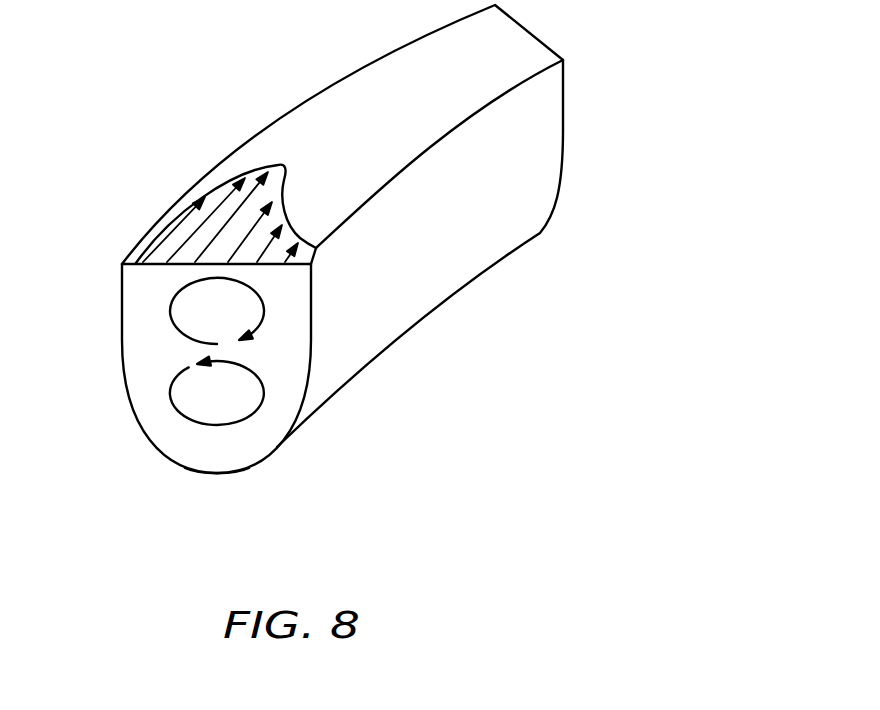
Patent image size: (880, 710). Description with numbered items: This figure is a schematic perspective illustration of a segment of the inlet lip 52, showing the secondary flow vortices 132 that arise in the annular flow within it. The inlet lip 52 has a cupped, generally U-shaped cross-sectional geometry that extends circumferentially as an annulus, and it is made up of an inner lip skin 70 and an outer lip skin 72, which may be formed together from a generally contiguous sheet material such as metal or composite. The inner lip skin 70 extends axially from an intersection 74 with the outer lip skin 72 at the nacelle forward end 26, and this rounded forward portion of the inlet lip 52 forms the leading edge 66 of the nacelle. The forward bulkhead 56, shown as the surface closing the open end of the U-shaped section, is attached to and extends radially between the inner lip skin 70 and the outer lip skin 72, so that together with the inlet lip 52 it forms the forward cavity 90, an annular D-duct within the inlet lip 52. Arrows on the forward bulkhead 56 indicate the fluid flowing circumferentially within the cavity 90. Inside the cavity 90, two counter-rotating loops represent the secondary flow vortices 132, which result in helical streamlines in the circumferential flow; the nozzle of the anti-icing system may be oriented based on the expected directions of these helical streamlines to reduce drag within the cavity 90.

The inlet lip 52 is at (293, 279).
The forward bulkhead 56 is at (138, 253).
The inner lip skin 70 is at (310, 362).
The outer lip skin 72 is at (125, 377).
The forward cavity 90 is at (148, 383).
The nacelle forward end 26 is at (179, 510).
The leading edge 66 is at (179, 510).
The intersection 74 is at (201, 473).
The secondary flow vortices 132 is at (264, 313).